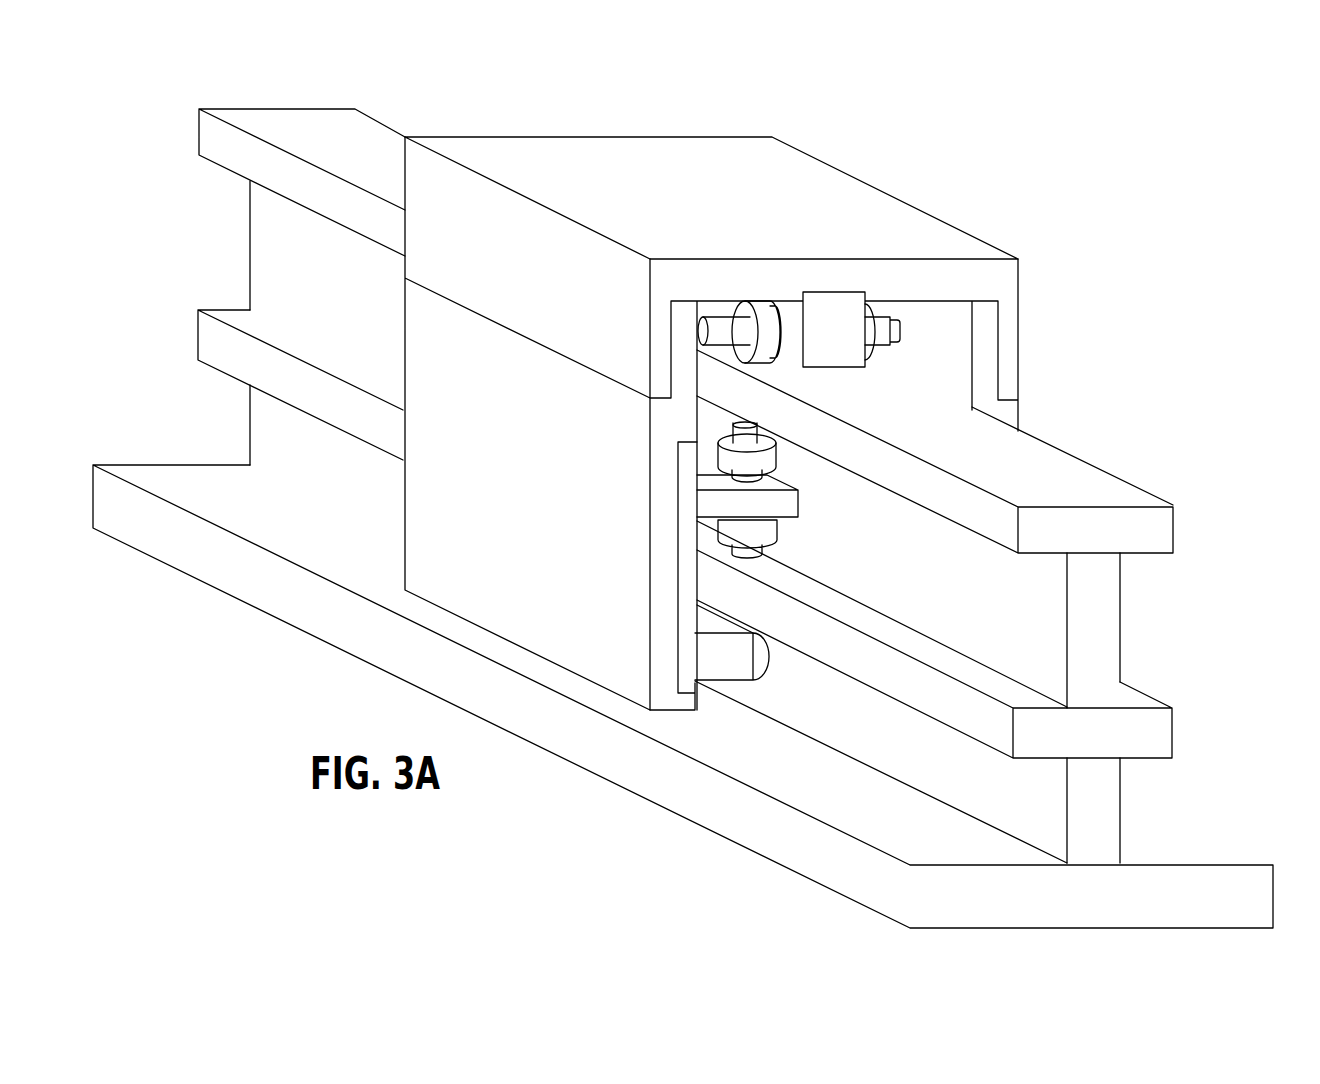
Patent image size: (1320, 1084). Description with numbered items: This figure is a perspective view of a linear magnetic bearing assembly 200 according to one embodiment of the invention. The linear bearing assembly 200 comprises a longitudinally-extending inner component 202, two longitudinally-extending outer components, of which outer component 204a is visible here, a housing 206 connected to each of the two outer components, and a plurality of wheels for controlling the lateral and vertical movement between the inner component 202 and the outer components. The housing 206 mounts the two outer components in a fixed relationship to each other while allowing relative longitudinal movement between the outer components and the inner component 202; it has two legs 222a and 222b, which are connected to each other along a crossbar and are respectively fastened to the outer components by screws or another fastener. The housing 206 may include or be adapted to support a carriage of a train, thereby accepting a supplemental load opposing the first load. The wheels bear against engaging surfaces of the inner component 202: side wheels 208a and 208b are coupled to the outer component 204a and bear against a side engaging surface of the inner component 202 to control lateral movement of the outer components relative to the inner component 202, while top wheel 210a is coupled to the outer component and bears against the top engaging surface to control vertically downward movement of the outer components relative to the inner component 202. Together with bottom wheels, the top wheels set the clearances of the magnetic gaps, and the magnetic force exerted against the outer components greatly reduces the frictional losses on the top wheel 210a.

The linear bearing assembly 200 is at (683, 504).
The longitudinally-extending inner component 202 is at (1155, 608).
The outer component 204a is at (695, 670).
The housing 206 is at (714, 192).
The side wheel 208a is at (733, 466).
The side wheel 208b is at (725, 530).
The top wheel 210a is at (767, 333).
The leg 222a is at (433, 353).
The leg 222b is at (1018, 412).